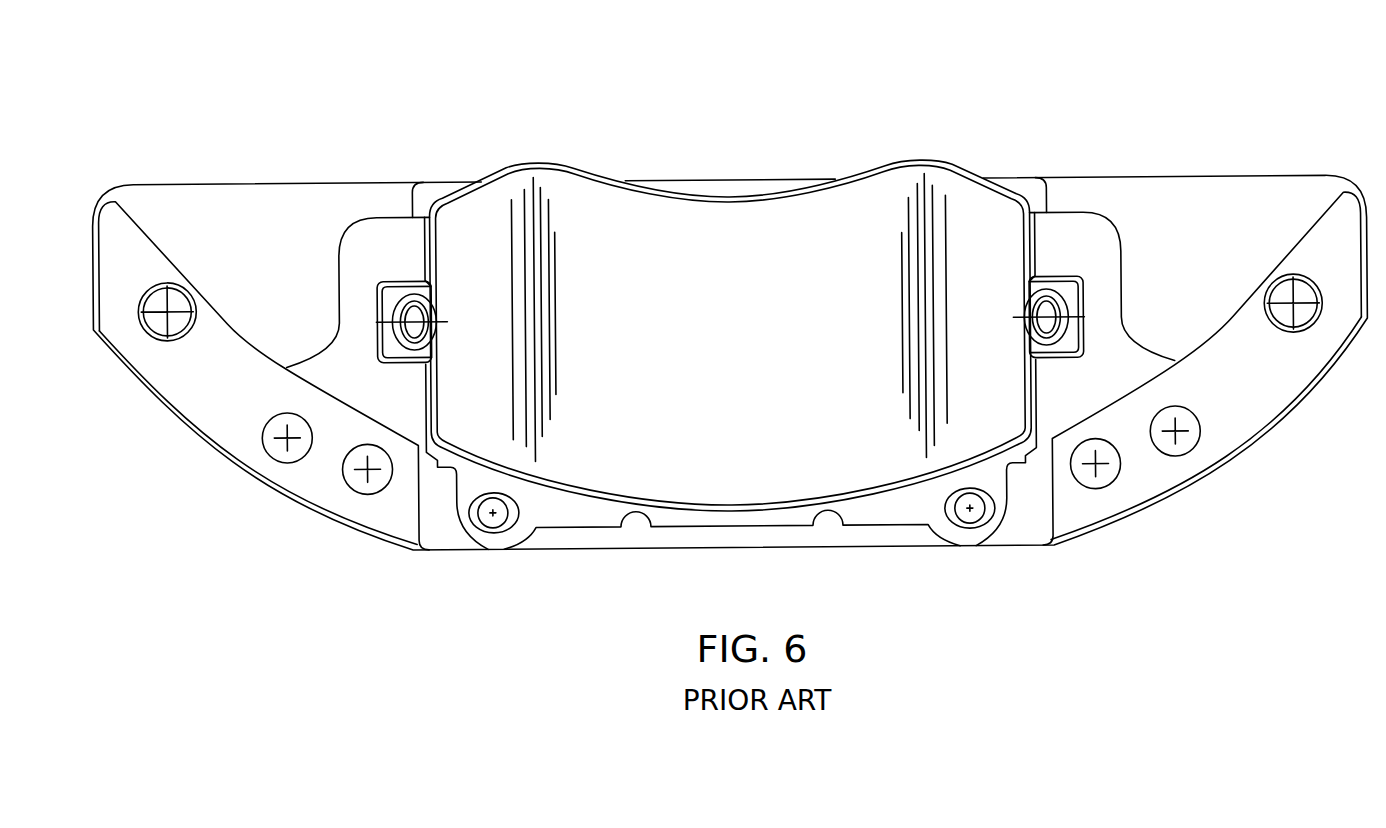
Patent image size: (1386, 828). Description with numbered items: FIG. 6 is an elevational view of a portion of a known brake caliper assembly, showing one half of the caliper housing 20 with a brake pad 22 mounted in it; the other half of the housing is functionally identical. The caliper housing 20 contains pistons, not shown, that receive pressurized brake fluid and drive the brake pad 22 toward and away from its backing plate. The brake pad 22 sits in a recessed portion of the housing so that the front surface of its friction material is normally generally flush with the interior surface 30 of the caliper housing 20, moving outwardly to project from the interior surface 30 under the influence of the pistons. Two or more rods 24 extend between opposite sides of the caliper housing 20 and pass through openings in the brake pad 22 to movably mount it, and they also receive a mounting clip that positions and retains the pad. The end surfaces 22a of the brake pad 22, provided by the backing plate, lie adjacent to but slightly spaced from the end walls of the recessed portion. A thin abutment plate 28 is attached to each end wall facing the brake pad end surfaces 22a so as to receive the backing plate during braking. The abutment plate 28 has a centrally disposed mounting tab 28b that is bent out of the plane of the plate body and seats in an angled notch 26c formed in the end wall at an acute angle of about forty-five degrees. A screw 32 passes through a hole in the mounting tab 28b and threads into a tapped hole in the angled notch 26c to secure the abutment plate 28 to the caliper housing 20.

The caliper housing 20 is at (220, 412).
The brake pad 22 is at (662, 222).
The end surface 22a is at (380, 216).
The rod 24 is at (500, 518).
The angled notch 26c is at (380, 360).
The abutment plate 28 is at (433, 231).
The mounting tab 28b is at (397, 280).
The interior surface 30 is at (212, 227).
The screw 32 is at (433, 311).